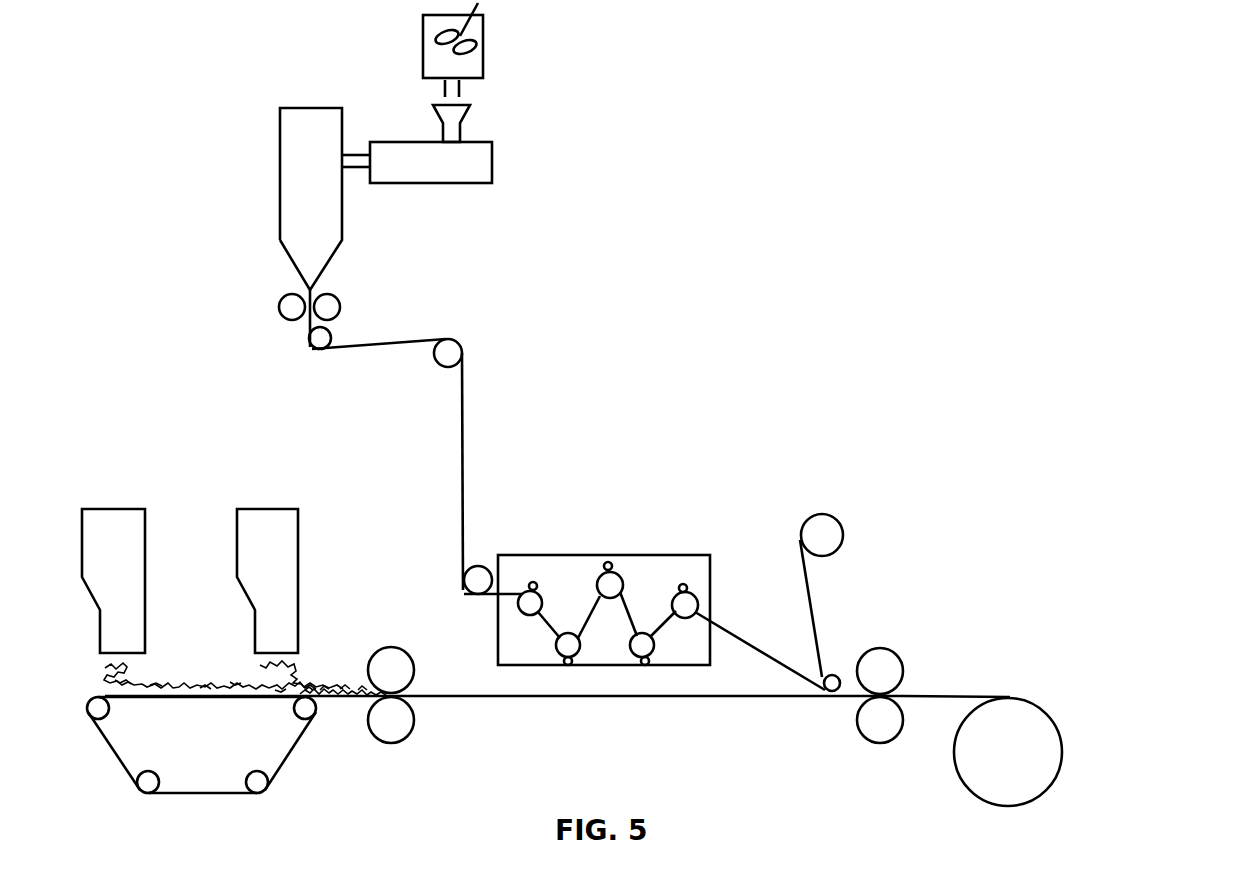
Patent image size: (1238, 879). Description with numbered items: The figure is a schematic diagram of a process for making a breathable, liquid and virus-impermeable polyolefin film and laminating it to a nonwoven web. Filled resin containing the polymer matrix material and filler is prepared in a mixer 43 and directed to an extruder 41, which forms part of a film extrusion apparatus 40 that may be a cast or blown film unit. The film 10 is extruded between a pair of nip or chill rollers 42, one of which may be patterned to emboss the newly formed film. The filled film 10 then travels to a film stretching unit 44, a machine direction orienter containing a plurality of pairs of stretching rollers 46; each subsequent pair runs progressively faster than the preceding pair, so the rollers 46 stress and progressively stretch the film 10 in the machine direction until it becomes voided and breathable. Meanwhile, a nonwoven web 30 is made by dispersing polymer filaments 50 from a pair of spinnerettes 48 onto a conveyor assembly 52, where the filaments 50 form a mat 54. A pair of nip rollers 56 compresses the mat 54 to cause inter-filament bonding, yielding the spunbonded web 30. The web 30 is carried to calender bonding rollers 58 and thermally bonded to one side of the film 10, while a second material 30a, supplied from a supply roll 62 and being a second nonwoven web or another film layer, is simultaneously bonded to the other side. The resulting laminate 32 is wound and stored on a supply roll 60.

The film 10 is at (380, 347).
The nonwoven web 30 is at (493, 698).
The second material 30a is at (815, 608).
The laminate 32 is at (967, 697).
The film extrusion apparatus 40 is at (310, 130).
The extruder 41 is at (487, 167).
The nip or chill rollers 42 is at (280, 300).
The mixer 43 is at (485, 53).
The film stretching unit 44 is at (636, 555).
The stretching rollers 46 is at (530, 585).
The spinnerettes 48 is at (105, 507).
The polymer filaments 50 is at (265, 680).
The conveyor assembly 52 is at (233, 795).
The mat 54 is at (342, 688).
The nip rollers 56 is at (396, 648).
The calender bonding rollers 58 is at (905, 663).
The supply roll 60 is at (1062, 762).
The supply roll 62 is at (826, 515).